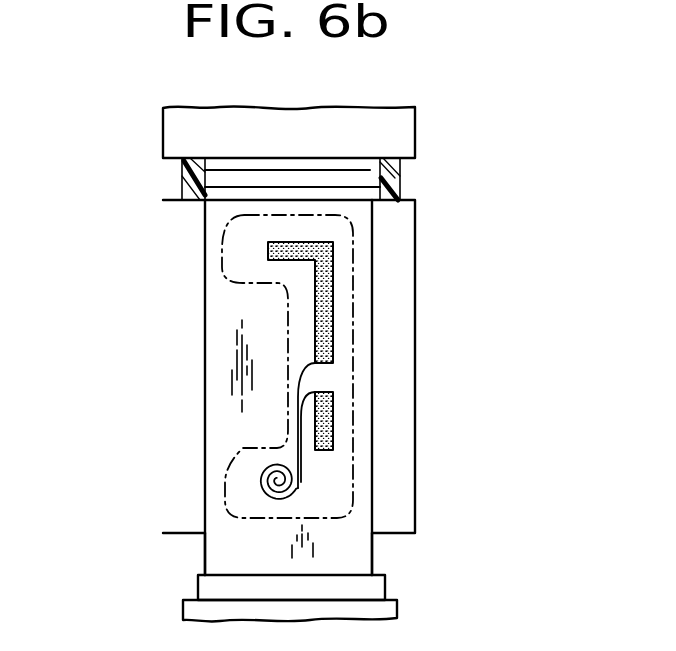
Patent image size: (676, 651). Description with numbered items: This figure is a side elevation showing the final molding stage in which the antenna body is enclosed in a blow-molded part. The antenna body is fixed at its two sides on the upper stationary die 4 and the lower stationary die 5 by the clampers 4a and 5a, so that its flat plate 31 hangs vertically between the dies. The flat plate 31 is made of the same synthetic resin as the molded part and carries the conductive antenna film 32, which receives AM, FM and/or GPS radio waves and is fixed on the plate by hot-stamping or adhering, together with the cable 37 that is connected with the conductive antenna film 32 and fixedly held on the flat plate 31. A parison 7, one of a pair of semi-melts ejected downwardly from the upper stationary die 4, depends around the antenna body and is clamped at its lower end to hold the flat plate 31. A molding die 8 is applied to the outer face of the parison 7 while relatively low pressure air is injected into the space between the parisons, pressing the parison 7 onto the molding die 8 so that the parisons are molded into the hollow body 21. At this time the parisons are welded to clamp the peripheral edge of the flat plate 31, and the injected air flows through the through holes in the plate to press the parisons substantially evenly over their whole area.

The upper stationary die 4 is at (397, 134).
The clamper 4a is at (190, 173).
The parison 7 is at (392, 183).
The molding die 8 is at (397, 313).
The hollow body 21 is at (288, 307).
The conductive antenna film 32 is at (333, 270).
The cable 37 is at (263, 473).
The flat plate 31 is at (357, 552).
The clamper 5a is at (210, 587).
The lower stationary die 5 is at (388, 610).